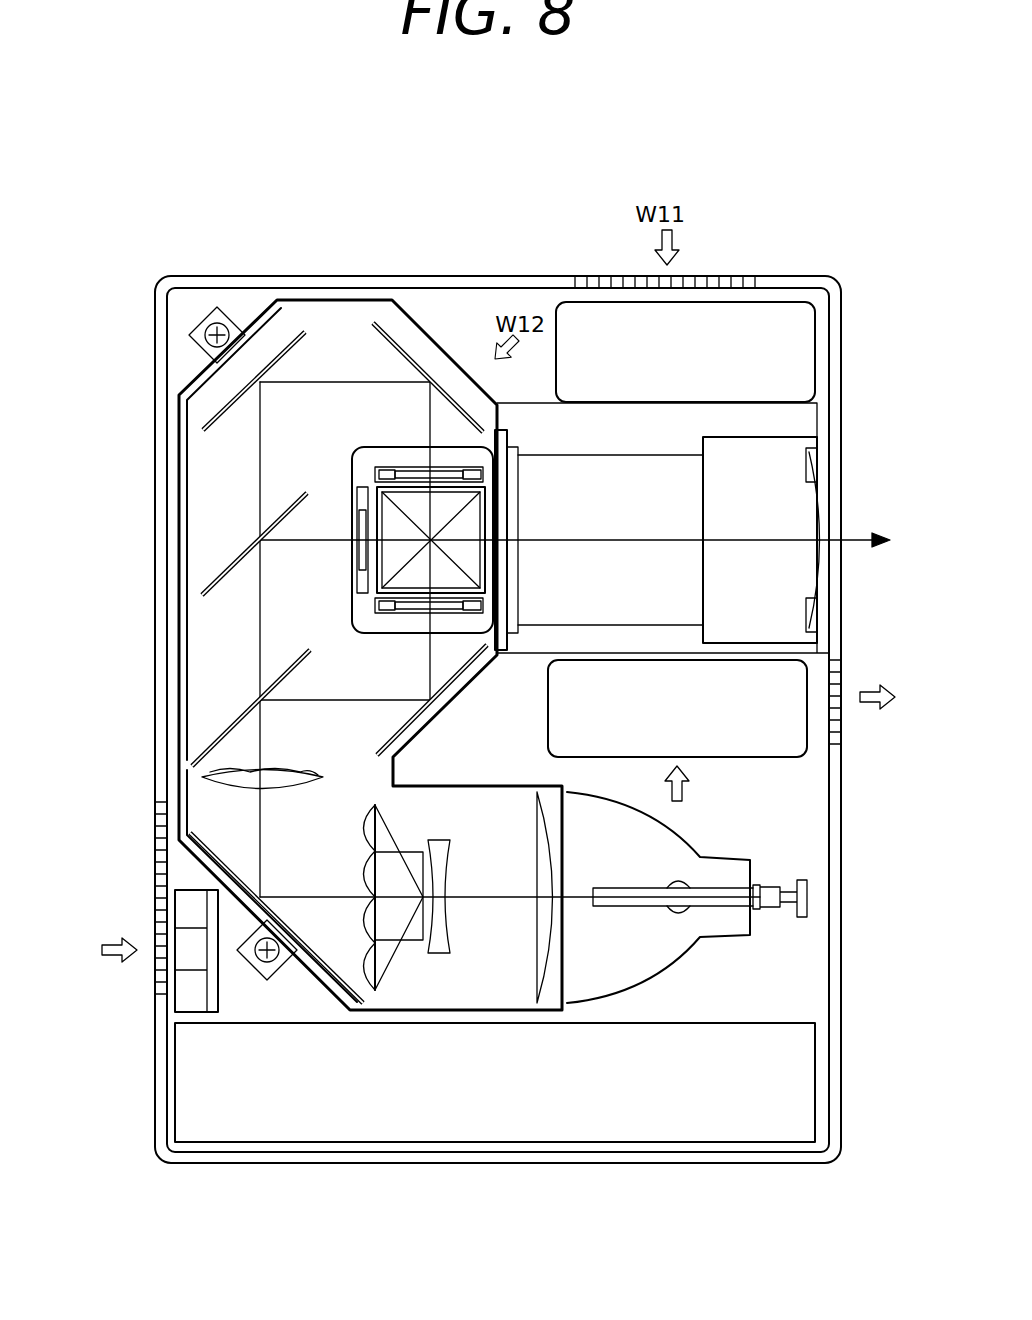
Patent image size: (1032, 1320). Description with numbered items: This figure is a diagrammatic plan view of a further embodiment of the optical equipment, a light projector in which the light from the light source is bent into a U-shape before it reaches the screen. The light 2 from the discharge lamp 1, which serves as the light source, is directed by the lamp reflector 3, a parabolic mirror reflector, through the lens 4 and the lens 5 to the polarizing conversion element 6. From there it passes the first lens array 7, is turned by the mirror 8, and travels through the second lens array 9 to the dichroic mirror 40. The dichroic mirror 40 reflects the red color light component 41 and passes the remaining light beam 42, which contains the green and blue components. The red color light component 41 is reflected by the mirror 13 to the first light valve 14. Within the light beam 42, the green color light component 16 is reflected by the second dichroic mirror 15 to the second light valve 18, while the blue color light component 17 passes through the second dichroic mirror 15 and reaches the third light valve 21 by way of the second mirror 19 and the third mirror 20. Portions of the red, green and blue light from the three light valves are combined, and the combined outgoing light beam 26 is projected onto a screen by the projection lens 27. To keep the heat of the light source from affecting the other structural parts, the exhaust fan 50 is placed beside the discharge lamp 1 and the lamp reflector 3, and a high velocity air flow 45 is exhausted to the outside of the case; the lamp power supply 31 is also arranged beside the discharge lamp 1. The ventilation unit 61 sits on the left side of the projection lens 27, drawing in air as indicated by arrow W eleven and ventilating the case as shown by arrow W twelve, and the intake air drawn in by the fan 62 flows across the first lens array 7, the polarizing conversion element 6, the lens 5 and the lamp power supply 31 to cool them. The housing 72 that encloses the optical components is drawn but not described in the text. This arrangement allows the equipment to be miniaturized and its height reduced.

The discharge lamp 1 is at (675, 885).
The light 2 is at (608, 885).
The lamp reflector 3 is at (652, 965).
The lens 4 is at (543, 915).
The lens 5 is at (442, 945).
The polarizing conversion element 6 is at (413, 948).
The first lens array 7 is at (370, 968).
The mirror 8 is at (188, 845).
The second lens array 9 is at (290, 782).
The mirror 13 is at (385, 740).
The first light valve 14 is at (396, 625).
The second dichroic mirror 15 is at (232, 557).
The green color light component 16 is at (305, 542).
The blue color light component 17 is at (262, 470).
The second light valve 18 is at (352, 570).
The second mirror 19 is at (223, 402).
The third mirror 20 is at (392, 350).
The third light valve 21 is at (388, 467).
The outgoing light beam 26 is at (752, 542).
The projection lens 27 is at (778, 510).
The lamp power supply 31 is at (810, 1055).
The dichroic mirror 40 is at (217, 733).
The red color light component 41 is at (340, 700).
The light beam 42 is at (259, 634).
The high velocity air flow 45 is at (885, 695).
The exhaust fan 50 is at (755, 740).
The ventilation unit 61 is at (707, 315).
The fan 62 is at (200, 966).
The optical unit housing 72 is at (455, 320).